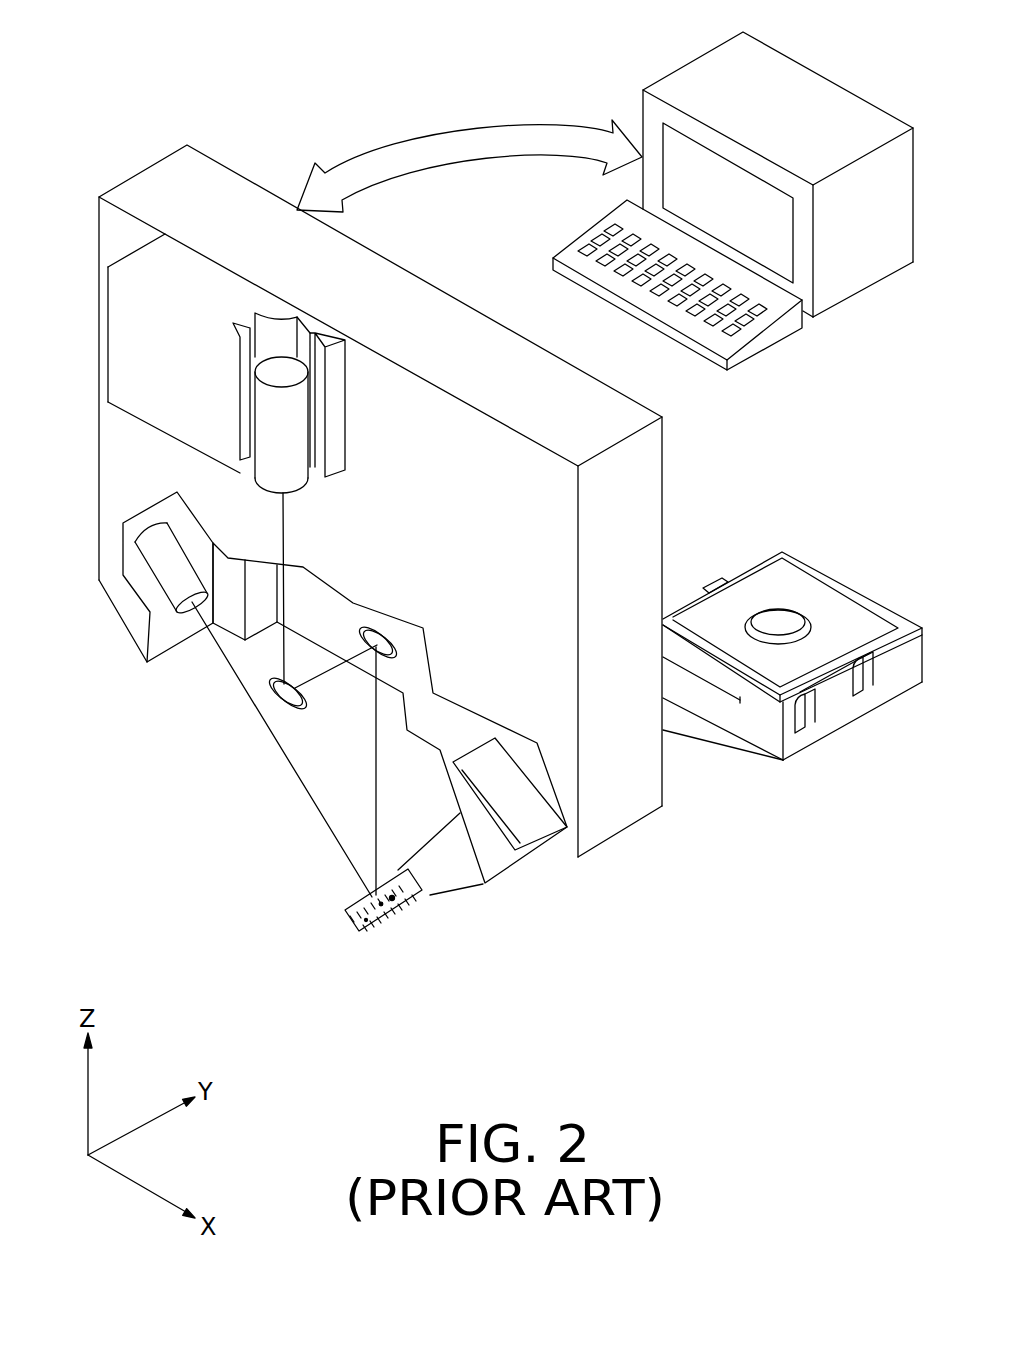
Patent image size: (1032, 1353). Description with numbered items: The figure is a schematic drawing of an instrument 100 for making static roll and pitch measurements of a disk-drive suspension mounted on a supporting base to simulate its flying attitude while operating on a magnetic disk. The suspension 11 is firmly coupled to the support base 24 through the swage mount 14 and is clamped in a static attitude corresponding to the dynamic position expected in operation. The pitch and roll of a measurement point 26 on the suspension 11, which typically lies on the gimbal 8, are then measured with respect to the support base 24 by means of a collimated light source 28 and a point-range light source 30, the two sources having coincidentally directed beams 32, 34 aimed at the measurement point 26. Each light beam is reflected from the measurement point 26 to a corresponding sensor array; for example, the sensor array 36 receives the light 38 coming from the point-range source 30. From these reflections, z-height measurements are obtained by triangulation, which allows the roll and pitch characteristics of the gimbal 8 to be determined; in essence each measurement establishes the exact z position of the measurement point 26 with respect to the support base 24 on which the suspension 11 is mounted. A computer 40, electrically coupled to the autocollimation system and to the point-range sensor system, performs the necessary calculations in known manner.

The instrument 100 is at (358, 118).
The computer 40 is at (840, 268).
The collimated light source 28 is at (278, 432).
The light beam 32 is at (283, 520).
The point-range light source 30 is at (167, 570).
The light beam 34 is at (277, 742).
The sensor array 36 is at (523, 810).
The light 38 is at (443, 863).
The measurement point 26 is at (350, 915).
The gimbal 8 is at (397, 918).
The swage mount 14 is at (828, 608).
The support base 24 is at (845, 710).
The suspension 11 is at (685, 737).